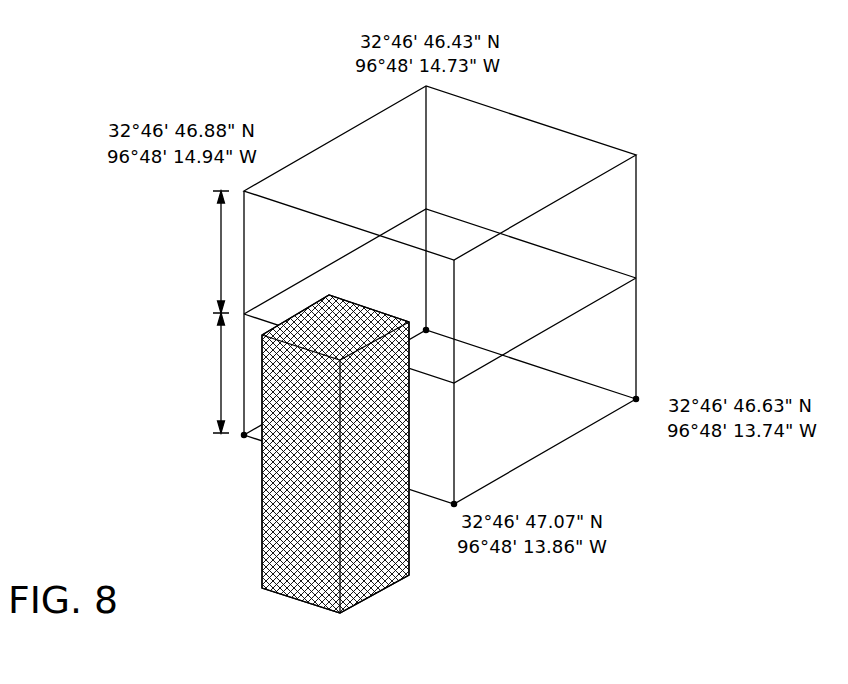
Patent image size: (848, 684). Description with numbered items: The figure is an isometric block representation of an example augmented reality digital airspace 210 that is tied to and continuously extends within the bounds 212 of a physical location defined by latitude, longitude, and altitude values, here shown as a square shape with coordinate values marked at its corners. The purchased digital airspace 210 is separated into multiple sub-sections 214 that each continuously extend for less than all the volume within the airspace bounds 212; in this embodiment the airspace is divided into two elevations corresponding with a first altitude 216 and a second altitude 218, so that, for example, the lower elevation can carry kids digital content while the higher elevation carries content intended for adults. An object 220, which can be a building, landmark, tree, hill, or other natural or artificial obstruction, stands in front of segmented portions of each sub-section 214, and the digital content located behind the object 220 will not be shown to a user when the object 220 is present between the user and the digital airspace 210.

The digital airspace 210 is at (703, 100).
The bounds 212 is at (636, 402).
The sub-section 214 is at (605, 238).
The first altitude 216 is at (204, 373).
The second altitude 218 is at (203, 252).
The object 220 is at (271, 539).